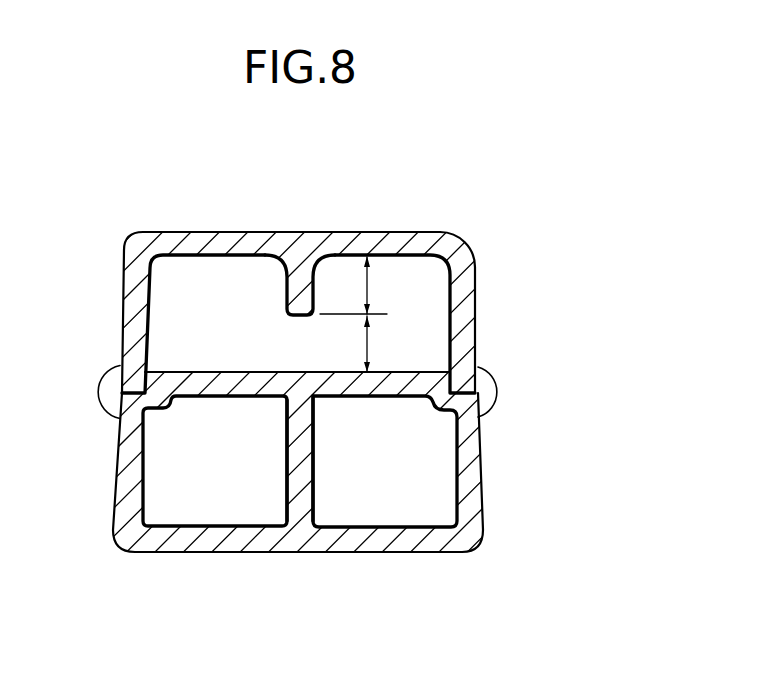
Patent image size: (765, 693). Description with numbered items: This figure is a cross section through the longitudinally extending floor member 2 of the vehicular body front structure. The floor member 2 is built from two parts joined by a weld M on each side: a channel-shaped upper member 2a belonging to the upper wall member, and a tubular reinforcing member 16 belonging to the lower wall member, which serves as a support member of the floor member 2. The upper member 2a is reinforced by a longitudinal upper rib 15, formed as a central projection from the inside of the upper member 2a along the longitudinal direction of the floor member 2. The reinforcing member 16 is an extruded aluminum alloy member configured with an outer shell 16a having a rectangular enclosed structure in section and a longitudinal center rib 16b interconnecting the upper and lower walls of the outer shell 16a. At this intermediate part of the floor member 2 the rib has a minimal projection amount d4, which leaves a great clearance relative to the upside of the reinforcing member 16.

The floor member 2 is at (449, 221).
The upper member 2a is at (238, 230).
The upper rib 15 is at (287, 292).
The reinforcing member 16 is at (484, 465).
The outer shell 16a is at (238, 545).
The center rib 16b is at (287, 463).
The weld M is at (102, 392).
The minimal projection amount d4 is at (361, 285).